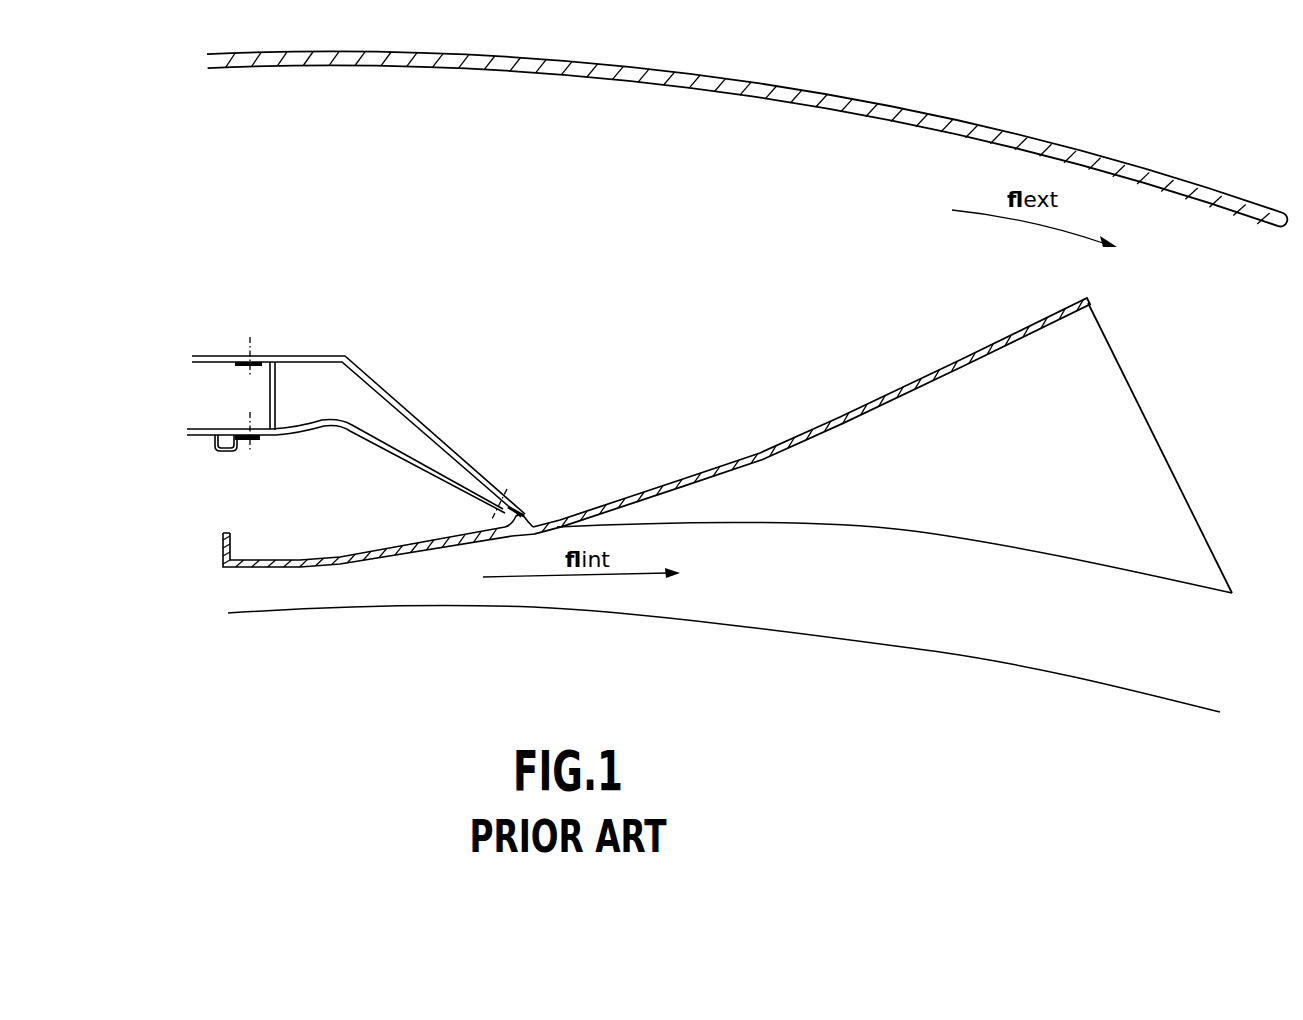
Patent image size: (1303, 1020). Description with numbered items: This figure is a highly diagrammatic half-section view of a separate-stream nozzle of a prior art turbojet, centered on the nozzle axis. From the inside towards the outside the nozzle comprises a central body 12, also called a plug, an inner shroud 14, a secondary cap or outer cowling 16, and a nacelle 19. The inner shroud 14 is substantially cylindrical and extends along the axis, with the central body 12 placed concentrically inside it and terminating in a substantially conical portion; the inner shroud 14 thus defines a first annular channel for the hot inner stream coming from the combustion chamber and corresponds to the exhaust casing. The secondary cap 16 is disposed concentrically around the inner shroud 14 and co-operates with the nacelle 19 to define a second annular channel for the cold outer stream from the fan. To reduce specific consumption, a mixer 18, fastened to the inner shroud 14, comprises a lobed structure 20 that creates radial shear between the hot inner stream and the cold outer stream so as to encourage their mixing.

The central body 12 is at (1097, 680).
The inner shroud 14 is at (340, 553).
The secondary cap 16 is at (412, 421).
The mixer 18 is at (762, 452).
The nacelle 19 is at (806, 92).
The lobed structure 20 is at (1172, 356).